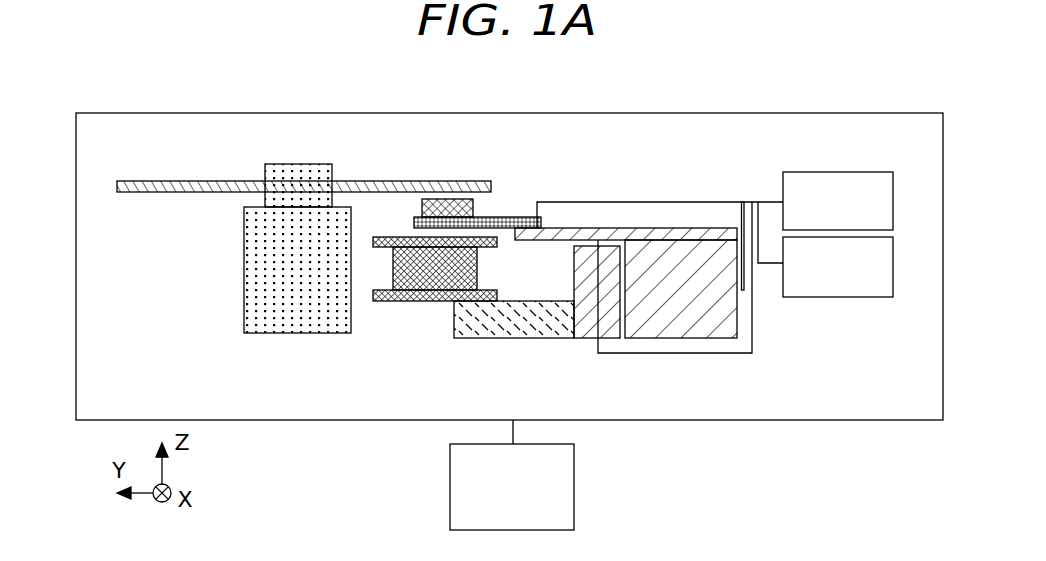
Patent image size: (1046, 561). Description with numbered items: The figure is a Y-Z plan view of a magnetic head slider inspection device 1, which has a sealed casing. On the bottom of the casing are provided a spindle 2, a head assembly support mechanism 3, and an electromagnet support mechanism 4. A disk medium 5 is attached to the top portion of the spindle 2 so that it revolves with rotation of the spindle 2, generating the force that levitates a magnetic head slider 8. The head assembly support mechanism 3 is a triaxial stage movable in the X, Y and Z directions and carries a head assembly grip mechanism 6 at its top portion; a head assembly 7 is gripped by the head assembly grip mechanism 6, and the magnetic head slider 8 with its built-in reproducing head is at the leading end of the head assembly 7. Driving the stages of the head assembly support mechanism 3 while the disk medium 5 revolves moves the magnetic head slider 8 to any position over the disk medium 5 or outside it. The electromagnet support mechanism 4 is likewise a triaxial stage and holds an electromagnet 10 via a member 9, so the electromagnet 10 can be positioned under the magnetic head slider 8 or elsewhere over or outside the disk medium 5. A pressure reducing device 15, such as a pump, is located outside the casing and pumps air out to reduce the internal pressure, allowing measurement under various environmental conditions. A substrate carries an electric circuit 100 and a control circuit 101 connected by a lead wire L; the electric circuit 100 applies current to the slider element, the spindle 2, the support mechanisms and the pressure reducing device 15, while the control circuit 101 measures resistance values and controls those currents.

The magnetic head slider inspection device 1 is at (758, 100).
The spindle 2 is at (257, 270).
The head assembly support mechanism 3 is at (727, 323).
The electromagnet support mechanism 4 is at (588, 336).
The disk medium 5 is at (128, 181).
The head assembly grip mechanism 6 is at (627, 235).
The head assembly 7 is at (518, 225).
The magnetic head slider 8 is at (452, 205).
The member 9 is at (515, 338).
The electromagnet 10 is at (423, 283).
The pressure reducing device 15 is at (575, 485).
The electric circuit 100 is at (837, 171).
The control circuit 101 is at (840, 297).
The lead wire L is at (683, 201).